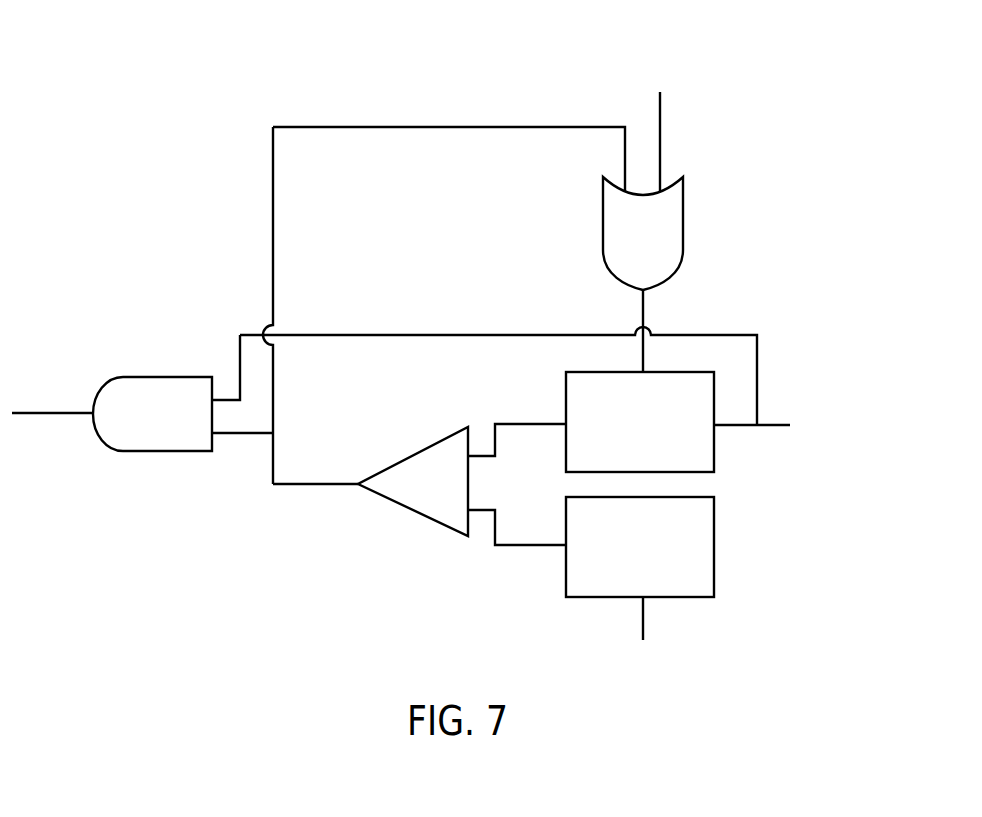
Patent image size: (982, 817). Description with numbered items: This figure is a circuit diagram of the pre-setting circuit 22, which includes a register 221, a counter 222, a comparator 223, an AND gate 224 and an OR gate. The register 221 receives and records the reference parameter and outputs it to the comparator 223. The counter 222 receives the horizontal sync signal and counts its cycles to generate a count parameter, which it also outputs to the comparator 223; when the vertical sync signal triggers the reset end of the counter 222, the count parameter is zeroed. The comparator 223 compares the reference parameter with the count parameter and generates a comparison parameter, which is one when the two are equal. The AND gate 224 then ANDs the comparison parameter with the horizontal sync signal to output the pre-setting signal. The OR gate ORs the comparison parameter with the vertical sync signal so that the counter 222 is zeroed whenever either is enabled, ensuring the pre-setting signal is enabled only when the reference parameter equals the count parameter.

The pre-setting circuit 22 is at (118, 32).
The register 221 is at (707, 590).
The counter 222 is at (707, 452).
The comparator 223 is at (430, 507).
The AND gate 224 is at (128, 387).